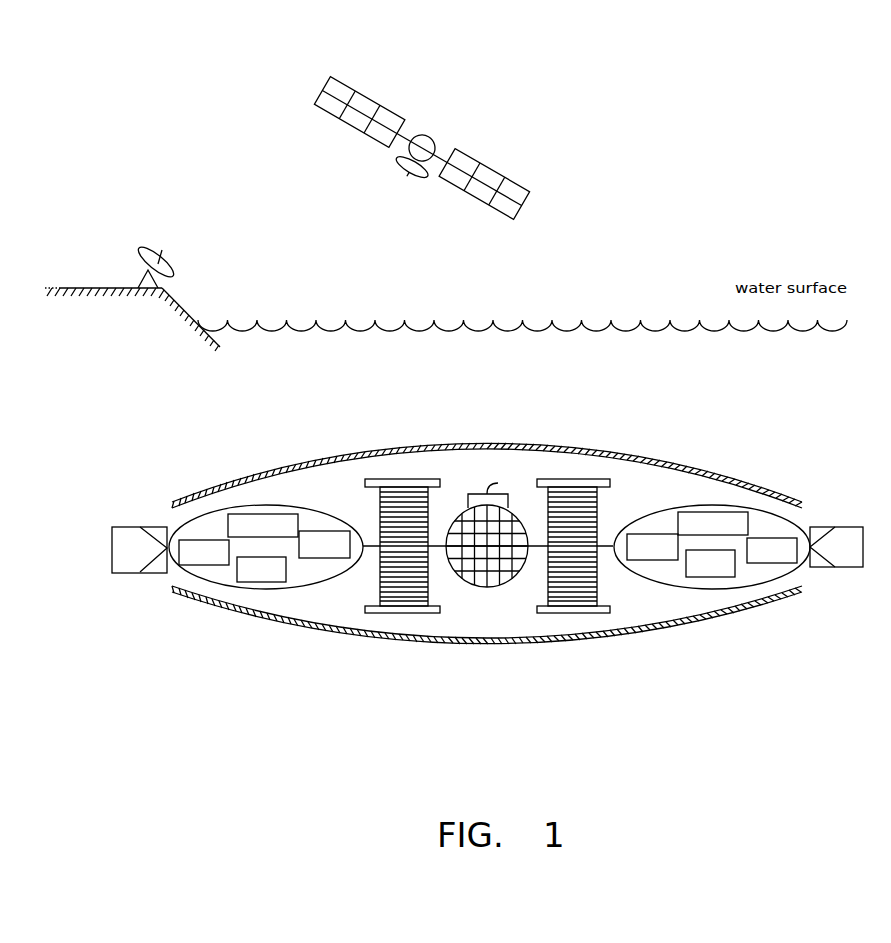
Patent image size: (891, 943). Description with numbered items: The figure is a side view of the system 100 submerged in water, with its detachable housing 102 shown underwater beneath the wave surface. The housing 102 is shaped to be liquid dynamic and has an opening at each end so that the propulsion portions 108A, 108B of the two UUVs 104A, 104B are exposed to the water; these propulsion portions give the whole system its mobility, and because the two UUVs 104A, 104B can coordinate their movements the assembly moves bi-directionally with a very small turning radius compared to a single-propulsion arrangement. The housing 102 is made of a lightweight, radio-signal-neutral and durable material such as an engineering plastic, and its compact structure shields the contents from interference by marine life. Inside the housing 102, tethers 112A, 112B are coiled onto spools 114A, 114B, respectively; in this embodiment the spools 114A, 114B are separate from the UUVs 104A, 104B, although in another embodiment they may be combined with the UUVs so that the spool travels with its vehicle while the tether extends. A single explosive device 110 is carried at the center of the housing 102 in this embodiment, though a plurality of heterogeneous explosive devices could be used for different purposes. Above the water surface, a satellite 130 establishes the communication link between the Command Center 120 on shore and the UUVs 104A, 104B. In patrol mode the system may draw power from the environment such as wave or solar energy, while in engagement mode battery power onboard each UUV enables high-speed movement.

The system 100 is at (694, 658).
The detachable housing 102 is at (625, 456).
The UUV 104A is at (718, 503).
The UUV 104B is at (268, 503).
The propulsion portion 108A is at (847, 527).
The propulsion portion 108B is at (140, 527).
The explosive device 110 is at (514, 517).
The tether 112A is at (575, 522).
The tether 112B is at (407, 520).
The spool 114A is at (575, 615).
The spool 114B is at (402, 617).
The Command Center 120 is at (138, 250).
The satellite 130 is at (403, 105).